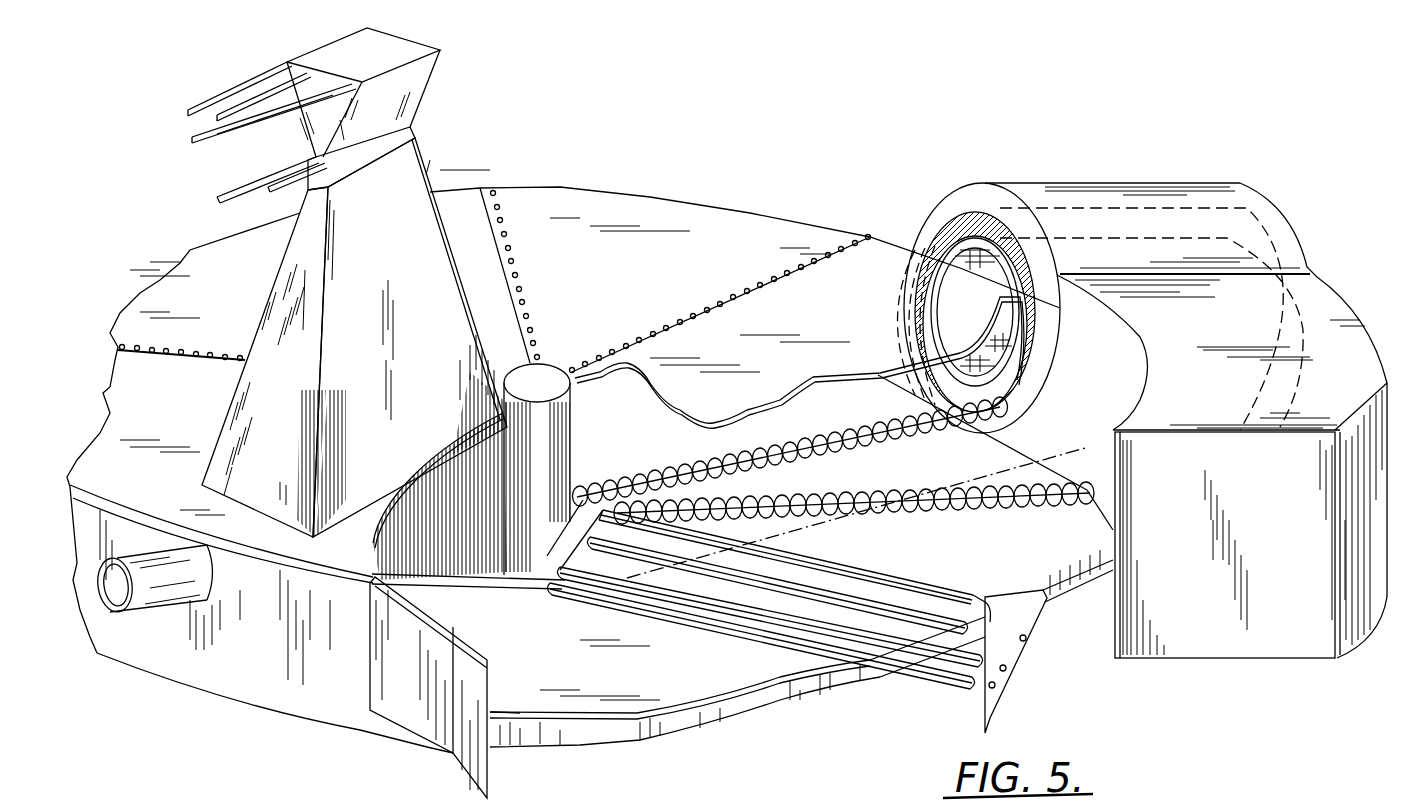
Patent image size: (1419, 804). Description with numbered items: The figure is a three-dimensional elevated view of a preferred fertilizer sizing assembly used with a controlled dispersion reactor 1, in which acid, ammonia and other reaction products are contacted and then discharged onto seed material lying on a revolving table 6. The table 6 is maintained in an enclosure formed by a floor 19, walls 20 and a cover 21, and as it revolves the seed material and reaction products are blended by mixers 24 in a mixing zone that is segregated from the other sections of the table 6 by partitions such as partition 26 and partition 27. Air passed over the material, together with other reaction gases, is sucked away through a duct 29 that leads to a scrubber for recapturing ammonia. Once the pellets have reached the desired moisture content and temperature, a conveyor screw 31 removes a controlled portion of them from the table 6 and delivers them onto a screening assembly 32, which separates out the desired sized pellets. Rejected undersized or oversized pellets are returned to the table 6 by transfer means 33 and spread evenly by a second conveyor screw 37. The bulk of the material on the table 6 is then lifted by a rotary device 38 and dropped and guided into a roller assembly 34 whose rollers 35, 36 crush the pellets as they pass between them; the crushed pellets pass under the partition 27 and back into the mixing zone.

The controlled dispersion reactor 1 is at (462, 143).
The revolving table 6 is at (562, 698).
The floor 19 is at (758, 708).
The walls 20 is at (257, 666).
The cover 21 is at (620, 286).
The mixers 24 is at (453, 460).
The partition 26 is at (383, 692).
The partition 27 is at (530, 627).
The duct 29 is at (212, 566).
The conveyor screw 31 is at (750, 447).
The screening assembly 32 is at (1272, 190).
The transfer means 33 is at (1210, 662).
The roller assembly 34 is at (700, 638).
The roller 35 is at (763, 630).
The roller 36 is at (817, 623).
The conveyor screw 37 is at (935, 492).
The rotary device 38 is at (867, 577).